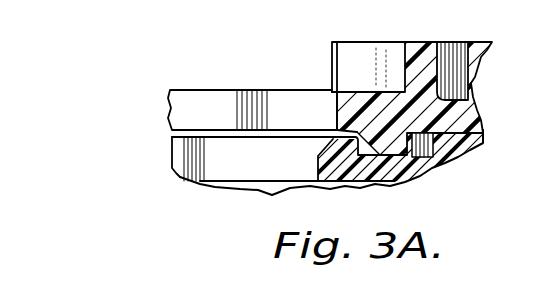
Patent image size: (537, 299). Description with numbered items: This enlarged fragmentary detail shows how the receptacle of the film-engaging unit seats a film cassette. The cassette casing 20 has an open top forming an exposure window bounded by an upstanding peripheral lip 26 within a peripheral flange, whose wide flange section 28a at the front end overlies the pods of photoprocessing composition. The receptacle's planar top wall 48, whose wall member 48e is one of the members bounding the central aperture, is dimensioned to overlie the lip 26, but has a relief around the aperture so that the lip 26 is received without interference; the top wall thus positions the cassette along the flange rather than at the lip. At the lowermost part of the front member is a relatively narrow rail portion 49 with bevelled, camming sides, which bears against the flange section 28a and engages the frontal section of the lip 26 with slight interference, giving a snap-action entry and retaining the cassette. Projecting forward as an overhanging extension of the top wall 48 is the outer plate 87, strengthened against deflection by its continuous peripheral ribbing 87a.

The casing 20 is at (185, 168).
The peripheral lip 26 is at (335, 140).
The wide flange section 28a is at (425, 172).
The top wall 48 is at (168, 107).
The wall member 48e is at (337, 133).
The rail portion 49 is at (392, 142).
The outer plate 87 is at (478, 77).
The peripheral ribbing 87a is at (440, 62).